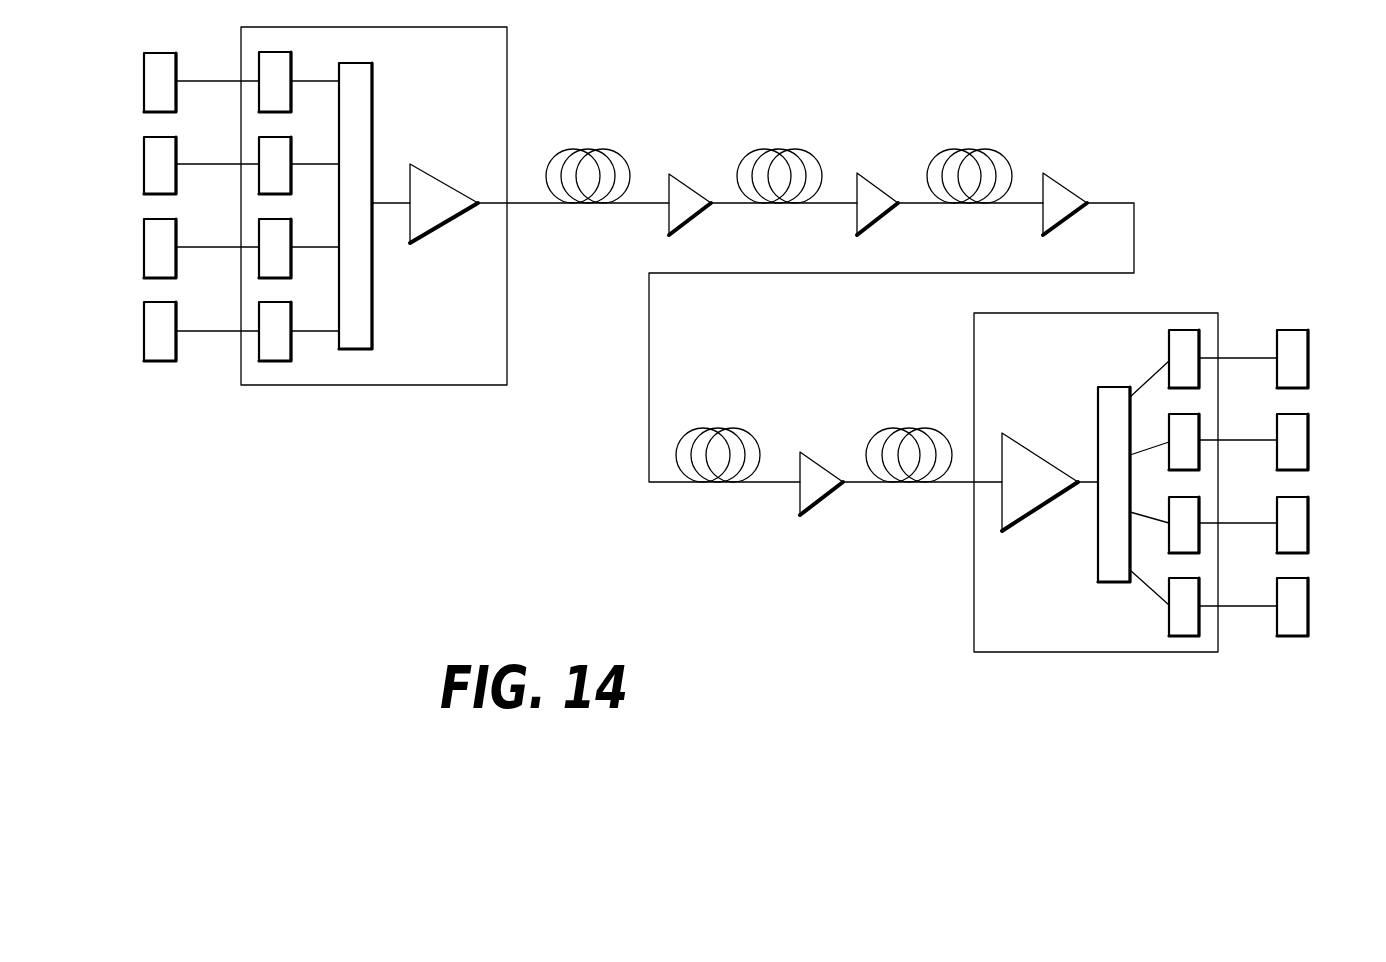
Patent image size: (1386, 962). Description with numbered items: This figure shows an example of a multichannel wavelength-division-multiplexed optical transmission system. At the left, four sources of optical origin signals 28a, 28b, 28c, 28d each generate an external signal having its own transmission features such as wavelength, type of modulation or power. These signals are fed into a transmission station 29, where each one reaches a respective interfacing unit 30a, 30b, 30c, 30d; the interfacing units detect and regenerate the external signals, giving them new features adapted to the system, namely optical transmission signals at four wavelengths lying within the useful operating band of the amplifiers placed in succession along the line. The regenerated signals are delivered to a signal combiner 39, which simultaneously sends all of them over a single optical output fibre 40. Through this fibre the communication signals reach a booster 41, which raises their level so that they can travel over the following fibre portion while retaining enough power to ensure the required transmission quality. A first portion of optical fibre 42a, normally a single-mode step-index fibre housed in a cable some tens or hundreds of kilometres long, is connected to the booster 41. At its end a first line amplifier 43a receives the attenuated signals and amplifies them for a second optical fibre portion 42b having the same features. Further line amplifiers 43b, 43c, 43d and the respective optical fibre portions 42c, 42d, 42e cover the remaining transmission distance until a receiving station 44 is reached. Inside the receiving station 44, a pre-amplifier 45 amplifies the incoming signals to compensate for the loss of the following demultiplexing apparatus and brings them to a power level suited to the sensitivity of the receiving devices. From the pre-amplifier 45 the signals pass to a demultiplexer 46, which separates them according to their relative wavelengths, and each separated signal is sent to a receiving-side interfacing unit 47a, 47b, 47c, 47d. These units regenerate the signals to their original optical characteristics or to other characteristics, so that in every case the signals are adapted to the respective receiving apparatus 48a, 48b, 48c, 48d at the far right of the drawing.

The source of optical origin signals 28a is at (157, 84).
The source of optical origin signals 28b is at (157, 167).
The source of optical origin signals 28c is at (157, 250).
The source of optical origin signals 28d is at (157, 334).
The interfacing unit 30a is at (278, 75).
The interfacing unit 30b is at (278, 158).
The interfacing unit 30c is at (278, 241).
The interfacing unit 30d is at (278, 325).
The signal combiner 39 is at (357, 91).
The optical output fibre 40 is at (387, 207).
The booster 41 is at (437, 202).
The transmission station 29 is at (432, 371).
The first portion of optical fibre 42a is at (628, 158).
The second optical fibre portion 42b is at (817, 160).
The optical fibre portion 42c is at (1003, 150).
The optical fibre portion 42d is at (750, 433).
The optical fibre portion 42e is at (937, 428).
The first line amplifier 43a is at (680, 207).
The line amplifier 43b is at (868, 207).
The line amplifier 43c is at (1058, 197).
The line amplifier 43d is at (812, 483).
The receiving station 44 is at (1030, 642).
The pre-amplifier 45 is at (1023, 498).
The demultiplexer 46 is at (1110, 416).
The interfacing unit 47a is at (1182, 347).
The interfacing unit 47b is at (1187, 428).
The interfacing unit 47c is at (1187, 512).
The interfacing unit 47d is at (1187, 590).
The receiving apparatus 48a is at (1293, 365).
The receiving apparatus 48b is at (1293, 444).
The receiving apparatus 48c is at (1293, 525).
The receiving apparatus 48d is at (1293, 603).